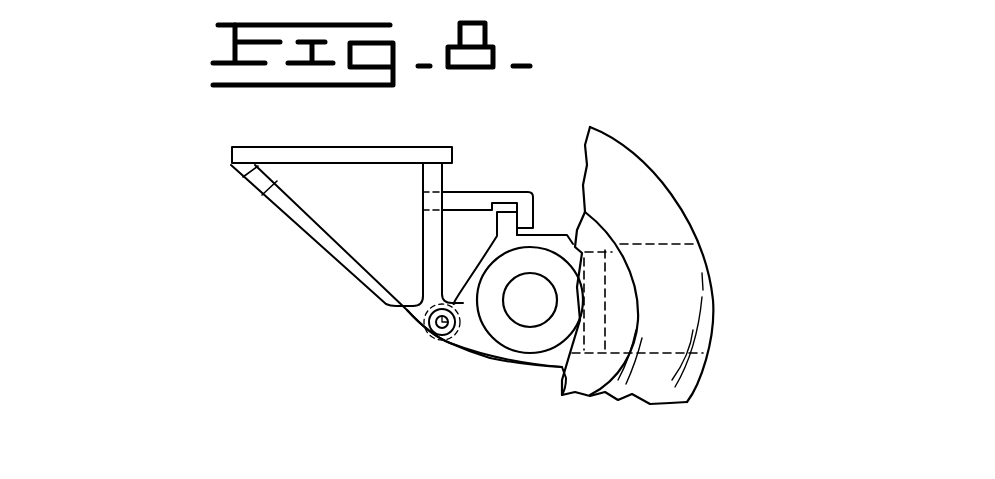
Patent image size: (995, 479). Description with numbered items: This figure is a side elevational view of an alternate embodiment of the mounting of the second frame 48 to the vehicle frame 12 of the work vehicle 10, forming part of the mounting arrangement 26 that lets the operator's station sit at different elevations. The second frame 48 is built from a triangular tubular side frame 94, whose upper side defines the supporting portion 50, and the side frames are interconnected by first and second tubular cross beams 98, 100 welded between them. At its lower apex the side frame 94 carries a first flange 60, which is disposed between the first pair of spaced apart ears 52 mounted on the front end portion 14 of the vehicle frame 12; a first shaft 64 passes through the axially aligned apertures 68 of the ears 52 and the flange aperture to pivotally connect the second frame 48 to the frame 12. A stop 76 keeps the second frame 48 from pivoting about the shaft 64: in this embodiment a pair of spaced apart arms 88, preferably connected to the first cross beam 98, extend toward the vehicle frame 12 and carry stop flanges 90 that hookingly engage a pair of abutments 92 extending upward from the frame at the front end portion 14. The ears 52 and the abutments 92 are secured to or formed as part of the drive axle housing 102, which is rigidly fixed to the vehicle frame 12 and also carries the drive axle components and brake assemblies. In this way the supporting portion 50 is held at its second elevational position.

The work vehicle 10 is at (762, 73).
The vehicle frame 12 is at (560, 385).
The front end portion 14 is at (538, 345).
The mounting arrangement 26 is at (162, 219).
The second frame 48 is at (288, 228).
The supporting portion 50 is at (247, 148).
The first pair of spaced apart ears 52 is at (462, 348).
The first flange 60 is at (418, 333).
The first shaft 64 is at (428, 318).
The apertures 68 is at (485, 252).
The stop 76 is at (574, 124).
The arms 88 is at (463, 193).
The stop flanges 90 is at (550, 228).
The abutments 92 is at (495, 218).
The first tubular side frame 94 is at (327, 247).
The first tubular cross beam 98 is at (423, 205).
The second tubular cross beam 100 is at (243, 181).
The drive axle housing 102 is at (497, 362).